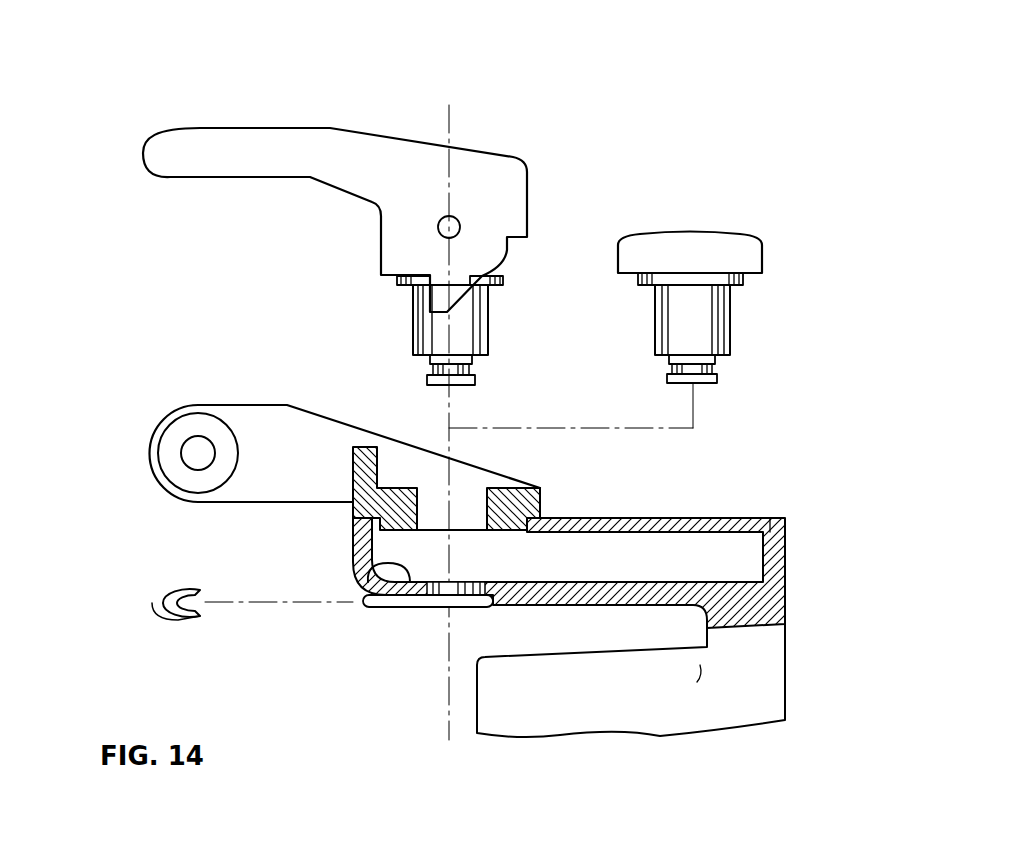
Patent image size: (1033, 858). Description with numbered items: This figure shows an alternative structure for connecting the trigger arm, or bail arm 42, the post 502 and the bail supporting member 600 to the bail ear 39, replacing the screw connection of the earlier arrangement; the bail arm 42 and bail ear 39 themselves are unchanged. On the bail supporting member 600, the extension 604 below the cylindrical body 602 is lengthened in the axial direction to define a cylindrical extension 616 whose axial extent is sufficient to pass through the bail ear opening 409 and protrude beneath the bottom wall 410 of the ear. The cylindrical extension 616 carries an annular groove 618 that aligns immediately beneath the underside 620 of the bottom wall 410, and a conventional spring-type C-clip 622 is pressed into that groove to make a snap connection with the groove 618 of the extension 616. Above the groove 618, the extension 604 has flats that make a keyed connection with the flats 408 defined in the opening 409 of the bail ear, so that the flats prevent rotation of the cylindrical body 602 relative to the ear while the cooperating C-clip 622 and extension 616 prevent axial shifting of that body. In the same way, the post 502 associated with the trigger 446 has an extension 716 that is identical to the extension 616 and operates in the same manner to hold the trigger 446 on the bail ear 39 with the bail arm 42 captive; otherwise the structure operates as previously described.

The trigger 446 is at (267, 118).
The post 502 is at (475, 336).
The extension 716 is at (428, 378).
The bail supporting member 600 is at (756, 323).
The cylindrical body 602 is at (705, 327).
The extension 604 is at (715, 365).
The annular groove 618 is at (718, 370).
The cylindrical extension 616 is at (718, 378).
The bail arm 42 is at (252, 420).
The bail ear 39 is at (352, 545).
The bottom wall 410 is at (362, 572).
The bail ear opening 409 is at (442, 598).
The flats 408 is at (462, 600).
The underside 620 is at (525, 608).
The C-clip 622 is at (160, 590).